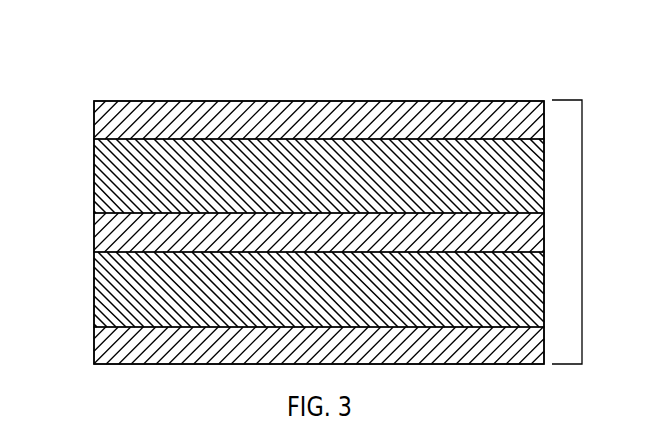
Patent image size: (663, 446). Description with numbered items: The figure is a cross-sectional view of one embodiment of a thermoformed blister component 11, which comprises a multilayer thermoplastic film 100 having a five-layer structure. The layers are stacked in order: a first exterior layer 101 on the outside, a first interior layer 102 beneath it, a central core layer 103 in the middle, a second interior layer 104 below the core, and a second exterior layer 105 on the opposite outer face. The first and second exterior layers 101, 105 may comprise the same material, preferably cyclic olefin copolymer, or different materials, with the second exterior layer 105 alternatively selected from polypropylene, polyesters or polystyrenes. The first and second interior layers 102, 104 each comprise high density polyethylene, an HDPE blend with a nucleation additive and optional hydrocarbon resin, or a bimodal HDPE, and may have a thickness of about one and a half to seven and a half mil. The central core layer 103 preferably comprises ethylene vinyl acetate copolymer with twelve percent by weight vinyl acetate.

The multilayer thermoplastic film 100 is at (310, 92).
The first exterior layer 101 is at (94, 120).
The first interior layer 102 is at (94, 178).
The central core layer 103 is at (94, 234).
The second interior layer 104 is at (94, 290).
The second exterior layer 105 is at (94, 345).
The thermoformed blister component 11 is at (582, 231).